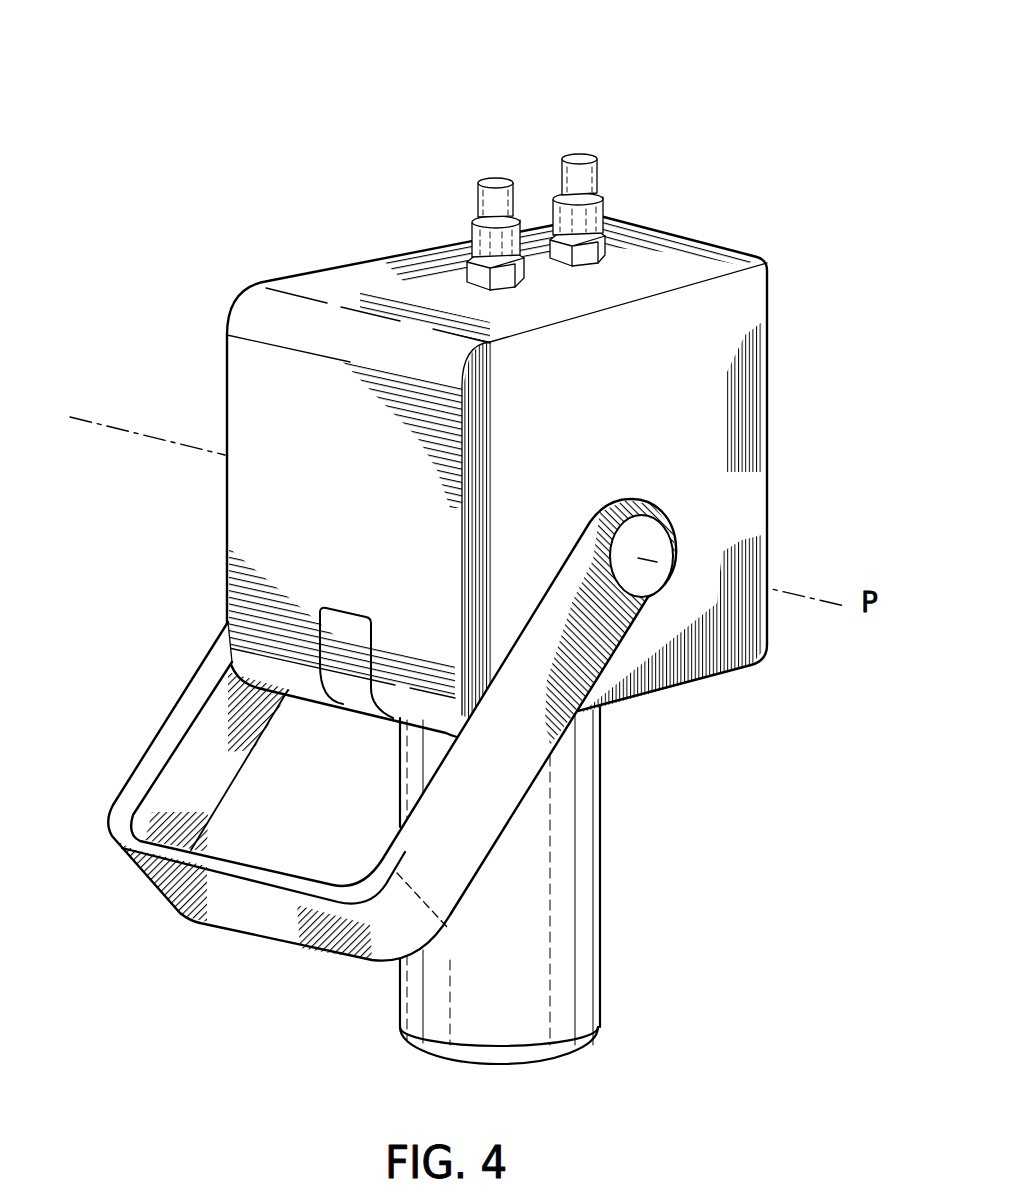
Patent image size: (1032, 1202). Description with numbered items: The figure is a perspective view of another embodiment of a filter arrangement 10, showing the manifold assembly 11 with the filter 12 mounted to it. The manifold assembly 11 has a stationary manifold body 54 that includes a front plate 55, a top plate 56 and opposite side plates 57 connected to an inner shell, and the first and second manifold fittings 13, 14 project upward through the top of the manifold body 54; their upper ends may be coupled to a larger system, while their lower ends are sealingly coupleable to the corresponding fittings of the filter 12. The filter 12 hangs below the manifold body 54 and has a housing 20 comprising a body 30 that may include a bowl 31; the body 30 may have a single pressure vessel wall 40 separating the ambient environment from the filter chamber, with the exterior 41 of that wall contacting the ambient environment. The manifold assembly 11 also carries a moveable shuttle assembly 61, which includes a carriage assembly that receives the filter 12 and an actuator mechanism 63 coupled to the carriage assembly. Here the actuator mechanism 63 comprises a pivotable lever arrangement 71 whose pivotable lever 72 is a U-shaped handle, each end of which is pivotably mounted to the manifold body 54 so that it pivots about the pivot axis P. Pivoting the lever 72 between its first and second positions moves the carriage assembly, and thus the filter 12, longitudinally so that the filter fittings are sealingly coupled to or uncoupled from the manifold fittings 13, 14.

The filter arrangement 10 is at (714, 104).
The manifold assembly 11 is at (502, 443).
The filter 12 is at (525, 885).
The first manifold fitting 13 is at (578, 177).
The second manifold fitting 14 is at (494, 205).
The housing 20 is at (580, 858).
The body 30 is at (585, 900).
The bowl 31 is at (570, 965).
The pressure vessel wall 40 is at (412, 762).
The exterior of the pressure vessel wall 41 is at (432, 997).
The manifold body 54 is at (738, 375).
The front plate 55 is at (248, 540).
The top plate 56 is at (413, 262).
The side plate 57 is at (743, 445).
The shuttle assembly 61 is at (368, 772).
The actuator mechanism 63 is at (175, 737).
The pivotable lever arrangement 71 is at (195, 752).
The pivotable lever 72 is at (253, 918).